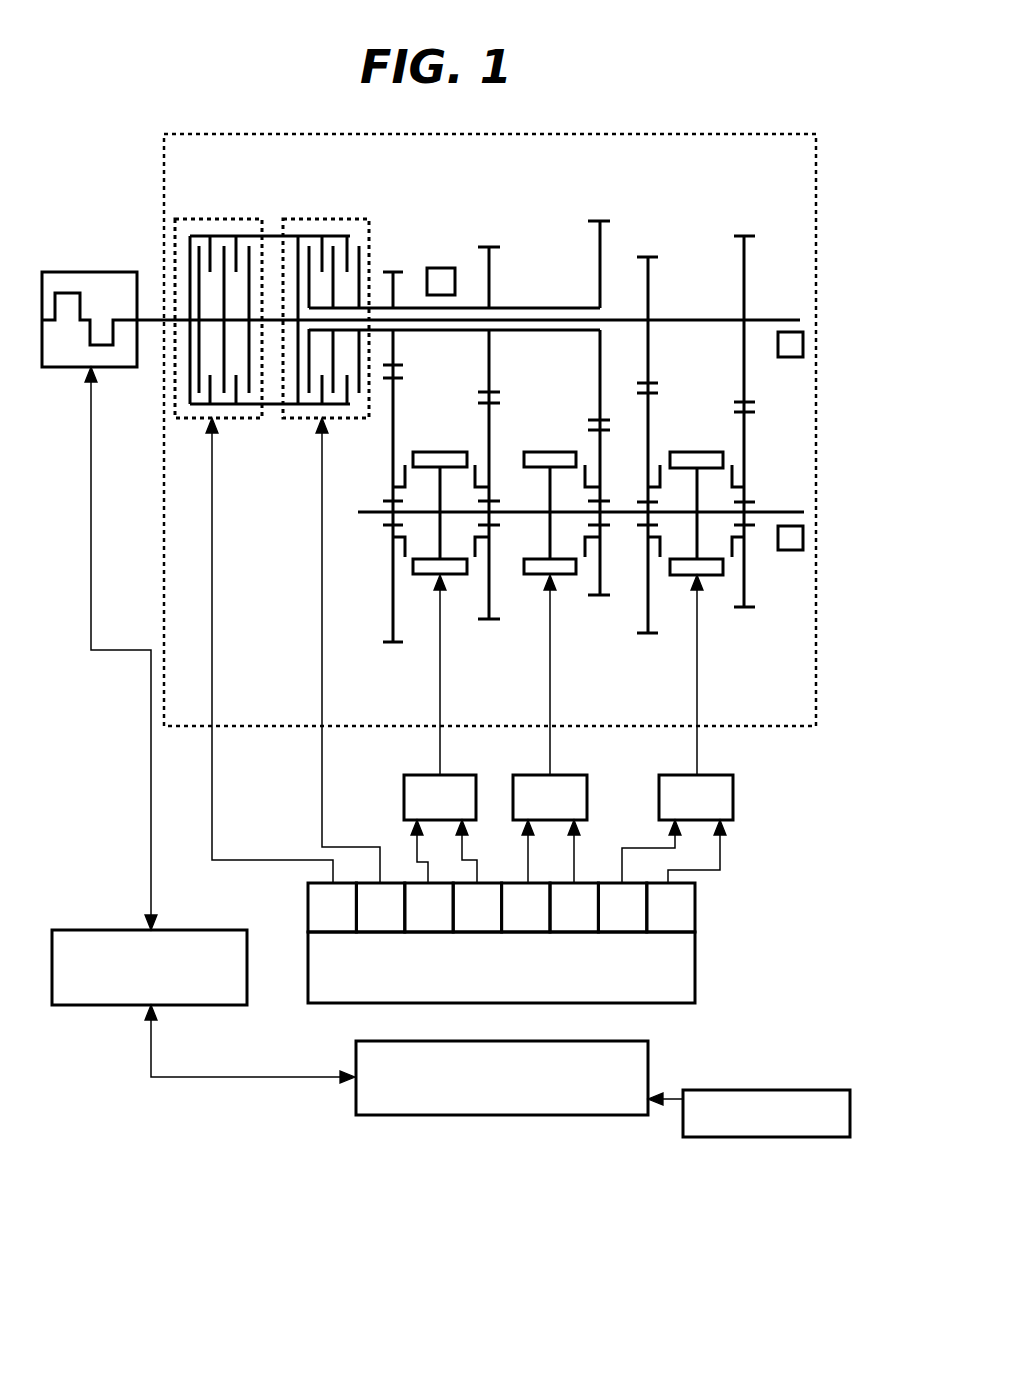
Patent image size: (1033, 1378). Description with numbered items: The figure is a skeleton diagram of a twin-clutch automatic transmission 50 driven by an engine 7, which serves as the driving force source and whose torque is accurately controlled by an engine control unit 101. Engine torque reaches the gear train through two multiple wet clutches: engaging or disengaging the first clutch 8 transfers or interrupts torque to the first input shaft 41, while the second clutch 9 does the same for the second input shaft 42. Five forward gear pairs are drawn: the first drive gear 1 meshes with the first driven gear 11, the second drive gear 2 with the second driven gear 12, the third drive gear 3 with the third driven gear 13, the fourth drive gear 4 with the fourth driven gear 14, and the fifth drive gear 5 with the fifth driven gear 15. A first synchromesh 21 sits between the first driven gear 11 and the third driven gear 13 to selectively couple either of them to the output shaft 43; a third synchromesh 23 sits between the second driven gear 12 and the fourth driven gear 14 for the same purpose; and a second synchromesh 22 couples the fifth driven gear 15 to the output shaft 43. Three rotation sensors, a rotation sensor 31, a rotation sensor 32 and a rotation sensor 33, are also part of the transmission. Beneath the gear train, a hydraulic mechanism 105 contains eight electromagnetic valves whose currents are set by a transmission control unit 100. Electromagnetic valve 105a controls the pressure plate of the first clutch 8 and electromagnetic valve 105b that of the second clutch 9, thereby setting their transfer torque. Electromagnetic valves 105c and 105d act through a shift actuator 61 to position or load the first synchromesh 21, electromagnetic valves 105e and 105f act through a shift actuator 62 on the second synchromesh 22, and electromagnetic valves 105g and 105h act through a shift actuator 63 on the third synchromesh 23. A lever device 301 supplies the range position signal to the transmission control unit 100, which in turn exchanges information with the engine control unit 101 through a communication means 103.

The first drive gear 1 is at (396, 270).
The second drive gear 2 is at (650, 255).
The third drive gear 3 is at (491, 245).
The fourth drive gear 4 is at (745, 234).
The fifth drive gear 5 is at (601, 218).
The engine 7 is at (85, 270).
The first clutch 8 is at (212, 217).
The second clutch 9 is at (322, 217).
The first driven gear 11 is at (392, 646).
The second driven gear 12 is at (648, 636).
The third driven gear 13 is at (487, 622).
The fourth driven gear 14 is at (742, 610).
The fifth driven gear 15 is at (598, 598).
The first synchromesh 21 is at (437, 450).
The second synchromesh 22 is at (548, 450).
The third synchromesh 23 is at (695, 450).
The rotation sensor 31 is at (790, 360).
The rotation sensor 32 is at (442, 266).
The rotation sensor 33 is at (790, 553).
The first input shaft 41 is at (778, 318).
The second input shaft 42 is at (535, 305).
The output shaft 43 is at (783, 510).
The automatic transmission 50 is at (162, 515).
The shift actuator 61 is at (440, 697).
The shift actuator 62 is at (550, 697).
The shift actuator 63 is at (696, 697).
The transmission control unit 100 is at (652, 1052).
The engine control unit 101 is at (90, 928).
The communication means 103 is at (240, 1080).
The hydraulic equipment 105 is at (698, 962).
The electromagnetic valve 105a is at (281, 675).
The electromagnetic valve 105b is at (360, 675).
The electromagnetic valve 105c is at (429, 876).
The electromagnetic valve 105d is at (477, 876).
The electromagnetic valve 105e is at (526, 876).
The electromagnetic valve 105f is at (574, 876).
The electromagnetic valve 105g is at (639, 876).
The electromagnetic valve 105h is at (686, 876).
The lever device 301 is at (683, 1125).